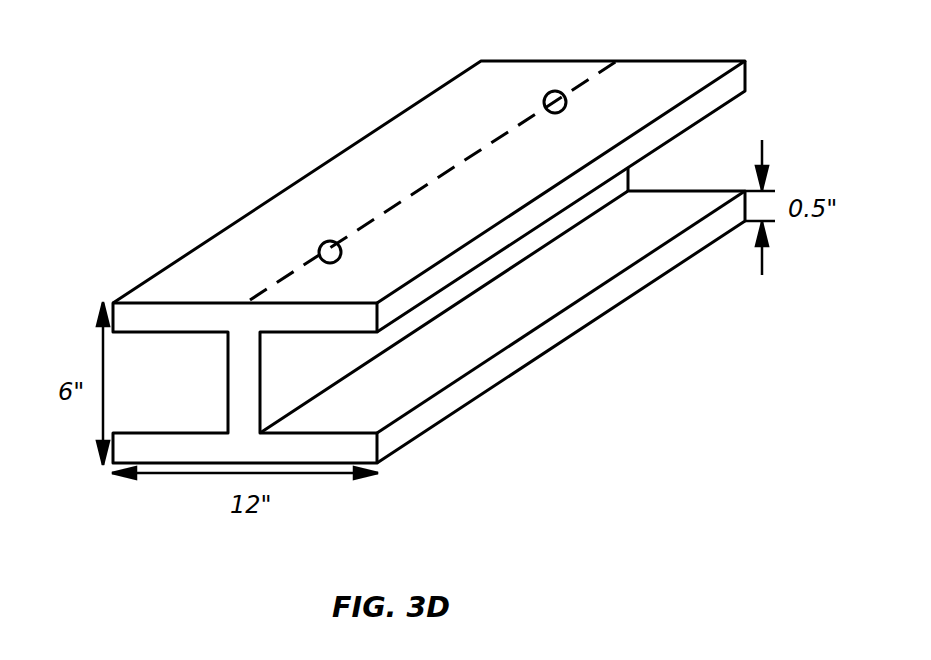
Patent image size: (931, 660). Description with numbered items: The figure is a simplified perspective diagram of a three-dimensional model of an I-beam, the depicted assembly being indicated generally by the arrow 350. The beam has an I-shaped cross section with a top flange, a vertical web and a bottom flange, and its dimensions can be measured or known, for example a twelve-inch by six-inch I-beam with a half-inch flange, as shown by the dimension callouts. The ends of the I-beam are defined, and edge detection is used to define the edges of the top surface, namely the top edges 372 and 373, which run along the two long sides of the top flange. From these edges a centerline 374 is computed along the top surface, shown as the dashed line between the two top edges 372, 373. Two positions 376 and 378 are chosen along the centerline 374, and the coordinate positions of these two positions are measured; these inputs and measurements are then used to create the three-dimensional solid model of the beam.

The I-beam structural member 350 is at (258, 124).
The top edge 372 is at (225, 229).
The top edge 373 is at (511, 214).
The centerline 374 is at (396, 204).
The position 376 is at (341, 252).
The position 378 is at (566, 102).